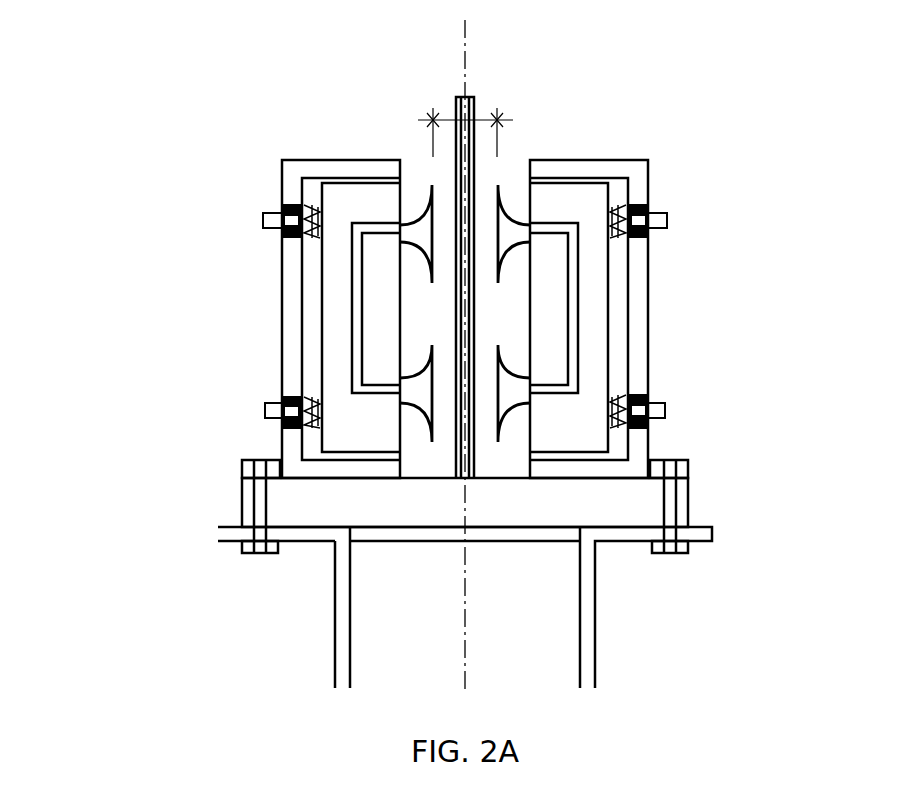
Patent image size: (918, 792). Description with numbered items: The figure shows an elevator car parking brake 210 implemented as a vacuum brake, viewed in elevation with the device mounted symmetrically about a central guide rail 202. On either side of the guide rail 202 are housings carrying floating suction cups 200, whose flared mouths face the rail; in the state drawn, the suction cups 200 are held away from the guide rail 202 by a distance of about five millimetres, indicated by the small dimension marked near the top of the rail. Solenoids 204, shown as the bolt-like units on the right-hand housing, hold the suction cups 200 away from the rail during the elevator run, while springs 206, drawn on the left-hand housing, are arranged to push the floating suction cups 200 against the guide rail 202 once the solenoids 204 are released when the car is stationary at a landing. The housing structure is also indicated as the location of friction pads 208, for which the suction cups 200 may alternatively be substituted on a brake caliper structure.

The suction cups 200 is at (420, 397).
The guide rail 202 is at (473, 148).
The solenoids 204 is at (646, 400).
The springs 206 is at (305, 392).
The friction pads 208 is at (565, 411).
The elevator car parking brake 210 is at (216, 111).